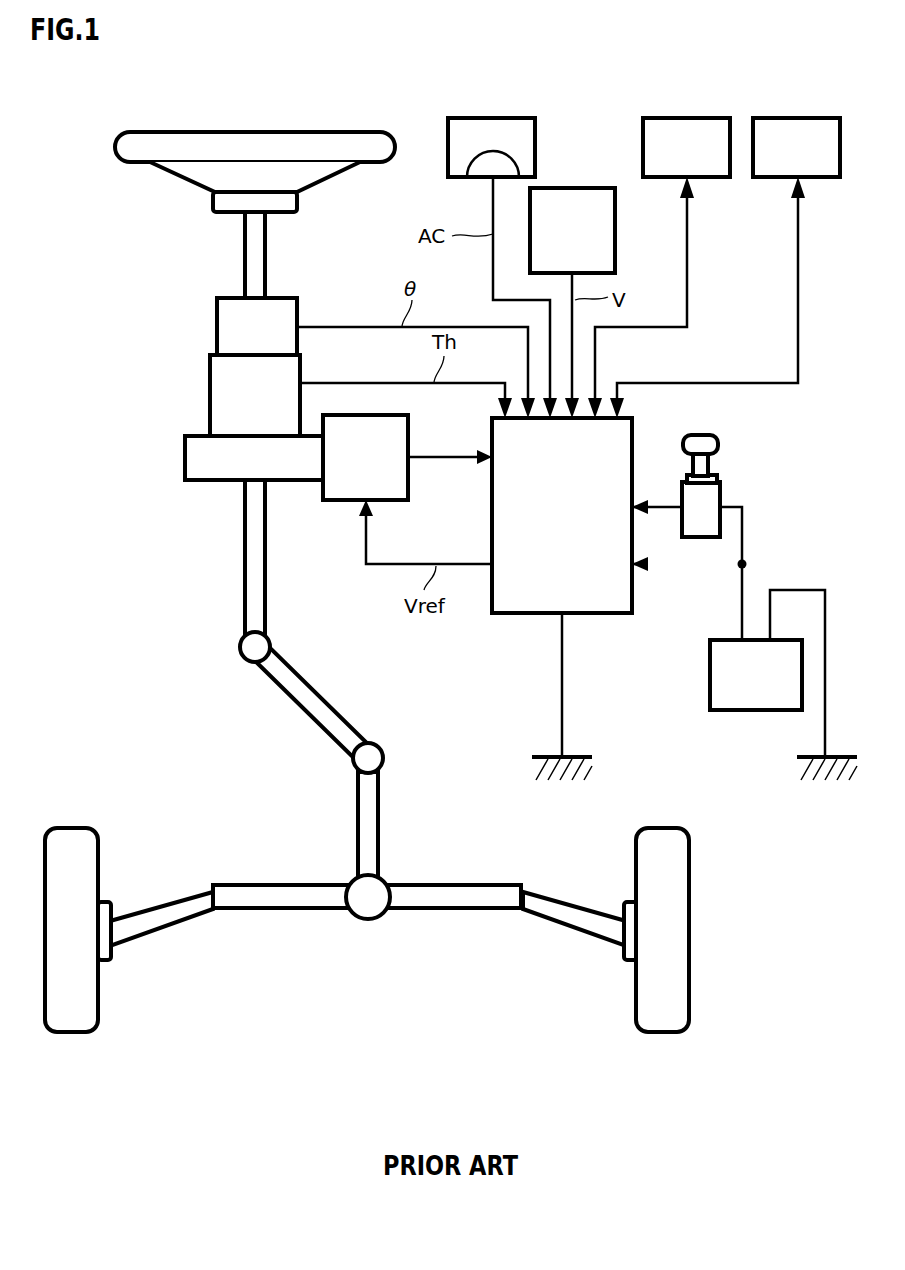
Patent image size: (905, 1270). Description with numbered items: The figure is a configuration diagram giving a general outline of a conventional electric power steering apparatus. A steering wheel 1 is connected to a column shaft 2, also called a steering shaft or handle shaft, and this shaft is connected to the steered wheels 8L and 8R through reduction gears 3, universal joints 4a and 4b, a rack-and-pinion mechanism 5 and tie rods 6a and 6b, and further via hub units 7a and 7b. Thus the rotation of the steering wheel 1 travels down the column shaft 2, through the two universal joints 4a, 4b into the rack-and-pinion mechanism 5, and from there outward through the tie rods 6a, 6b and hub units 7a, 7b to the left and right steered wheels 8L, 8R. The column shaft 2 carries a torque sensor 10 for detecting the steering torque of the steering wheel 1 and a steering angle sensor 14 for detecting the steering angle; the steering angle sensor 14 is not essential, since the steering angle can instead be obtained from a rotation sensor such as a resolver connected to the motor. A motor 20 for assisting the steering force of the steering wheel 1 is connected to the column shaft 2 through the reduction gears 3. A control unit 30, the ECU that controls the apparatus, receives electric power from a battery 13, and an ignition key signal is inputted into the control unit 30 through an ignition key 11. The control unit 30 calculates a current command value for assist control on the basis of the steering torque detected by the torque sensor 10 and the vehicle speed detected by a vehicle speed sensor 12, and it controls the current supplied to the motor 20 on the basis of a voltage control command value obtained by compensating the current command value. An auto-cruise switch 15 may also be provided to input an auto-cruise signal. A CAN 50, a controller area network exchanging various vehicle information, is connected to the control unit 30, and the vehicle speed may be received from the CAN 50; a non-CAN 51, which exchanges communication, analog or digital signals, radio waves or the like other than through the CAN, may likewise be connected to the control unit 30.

The steering wheel 1 is at (395, 147).
The column shaft 2 is at (245, 260).
The reduction gears 3 is at (185, 464).
The universal joint 4a is at (240, 653).
The universal joint 4b is at (353, 765).
The rack-and-pinion mechanism 5 is at (386, 880).
The tie rod 6a is at (148, 905).
The tie rod 6b is at (558, 905).
The hub unit 7a is at (111, 955).
The hub unit 7b is at (624, 955).
The steered wheel 8L is at (98, 1016).
The steered wheel 8R is at (636, 1016).
The torque sensor 10 is at (210, 387).
The ignition key 11 is at (718, 442).
The vehicle speed sensor 12 is at (615, 201).
The battery 13 is at (710, 665).
The steering angle sensor 14 is at (217, 322).
The auto-cruise switch 15 is at (520, 118).
The motor 20 is at (408, 420).
The control unit 30 is at (632, 421).
The CAN 50 is at (829, 118).
The non-CAN 51 is at (718, 118).